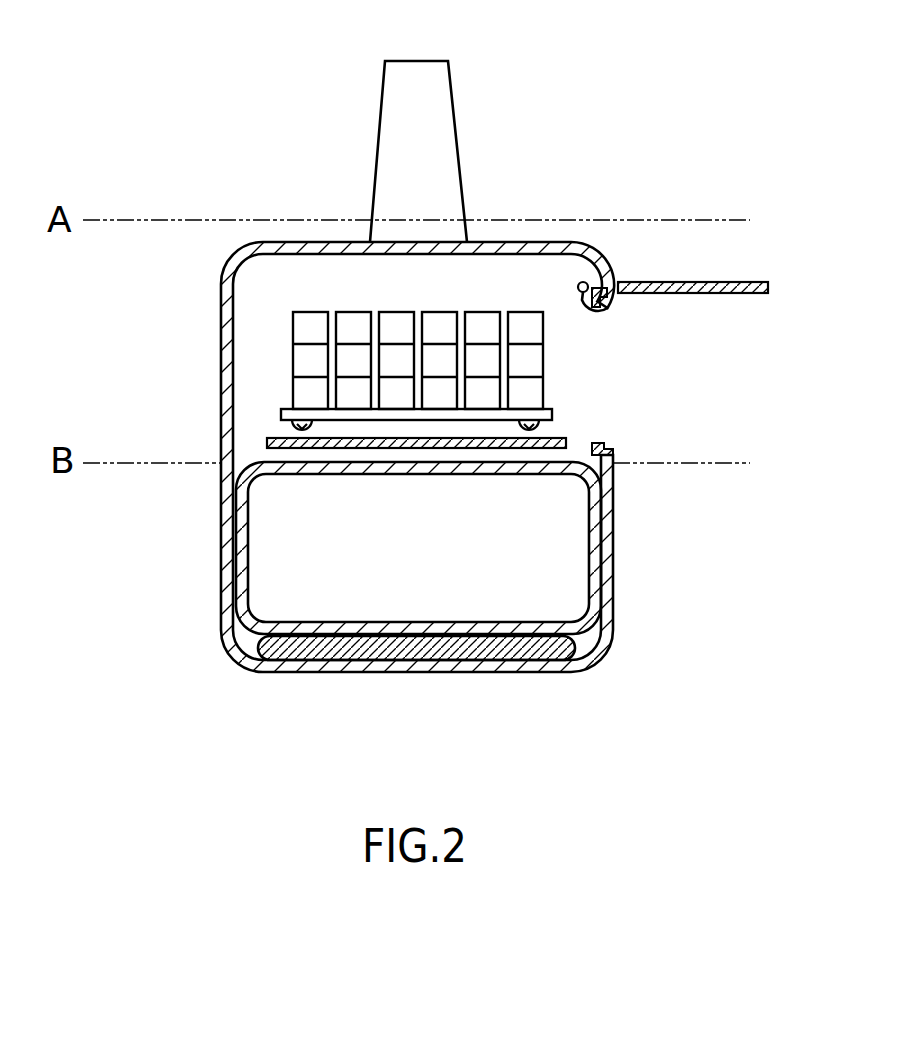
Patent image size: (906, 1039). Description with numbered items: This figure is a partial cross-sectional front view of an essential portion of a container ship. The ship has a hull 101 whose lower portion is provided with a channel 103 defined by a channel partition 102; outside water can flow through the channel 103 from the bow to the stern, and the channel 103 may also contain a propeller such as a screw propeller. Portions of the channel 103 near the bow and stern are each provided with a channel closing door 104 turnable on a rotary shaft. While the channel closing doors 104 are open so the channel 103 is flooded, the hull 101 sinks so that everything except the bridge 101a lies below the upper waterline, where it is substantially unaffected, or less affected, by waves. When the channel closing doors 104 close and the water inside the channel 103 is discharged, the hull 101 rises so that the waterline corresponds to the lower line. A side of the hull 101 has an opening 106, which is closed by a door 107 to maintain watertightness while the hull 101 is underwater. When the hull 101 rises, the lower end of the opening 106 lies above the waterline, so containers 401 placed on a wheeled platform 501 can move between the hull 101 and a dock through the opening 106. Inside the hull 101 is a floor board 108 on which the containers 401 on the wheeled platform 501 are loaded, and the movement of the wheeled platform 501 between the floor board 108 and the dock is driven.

The hull 101 is at (520, 242).
The bridge 101a is at (412, 73).
The channel partition 102 is at (262, 463).
The channel 103 is at (442, 557).
The channel closing door 104 is at (411, 655).
The opening 106 is at (599, 443).
The door 107 is at (694, 282).
The floor board 108 is at (564, 438).
The container 401 is at (396, 334).
The wheeled platform 501 is at (552, 410).